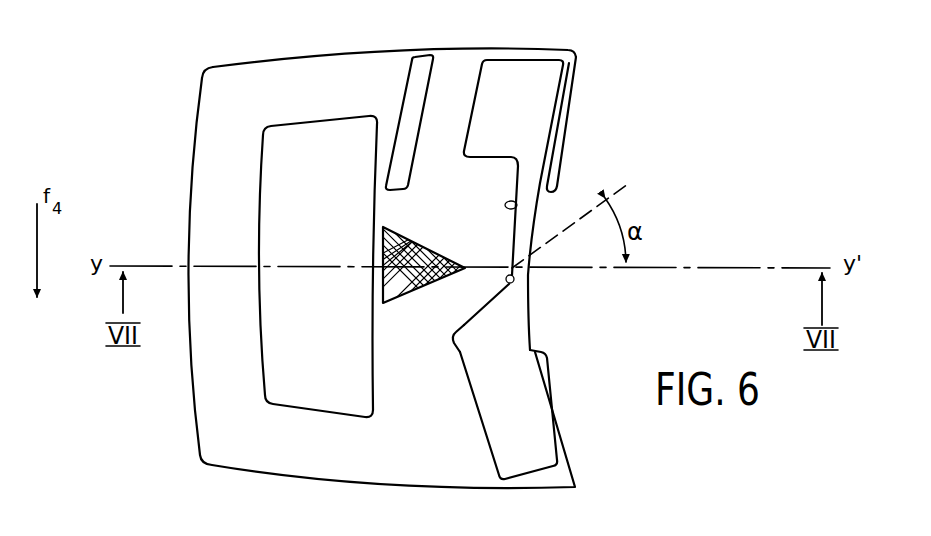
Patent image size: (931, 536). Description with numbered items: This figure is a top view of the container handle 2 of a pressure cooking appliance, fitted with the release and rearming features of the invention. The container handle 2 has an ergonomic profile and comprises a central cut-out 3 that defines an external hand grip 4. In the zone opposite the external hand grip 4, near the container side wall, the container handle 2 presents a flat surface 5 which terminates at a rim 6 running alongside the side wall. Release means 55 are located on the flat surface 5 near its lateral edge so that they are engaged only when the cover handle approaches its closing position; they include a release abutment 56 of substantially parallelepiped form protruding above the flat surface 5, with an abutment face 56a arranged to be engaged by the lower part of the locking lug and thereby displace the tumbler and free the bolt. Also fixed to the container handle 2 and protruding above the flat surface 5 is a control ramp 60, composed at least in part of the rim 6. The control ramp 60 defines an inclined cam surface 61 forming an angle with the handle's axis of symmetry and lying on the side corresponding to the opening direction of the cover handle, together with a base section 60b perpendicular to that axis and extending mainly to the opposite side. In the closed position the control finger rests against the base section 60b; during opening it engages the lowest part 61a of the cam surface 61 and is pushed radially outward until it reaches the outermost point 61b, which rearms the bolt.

The container handle 2 is at (192, 408).
The central cut-out 3 is at (316, 140).
The external hand grip 4 is at (346, 268).
The flat surface 5 is at (457, 77).
The rim 6 is at (562, 92).
The release means 55 is at (379, 122).
The release abutment 56 is at (379, 122).
The abutment face 56a is at (397, 190).
The control ramp 60 is at (539, 244).
The base section 60b is at (517, 205).
The cam surface 61 is at (490, 309).
The lowest part of cam surface 61a is at (520, 279).
The outermost point of cam surface 61b is at (452, 338).